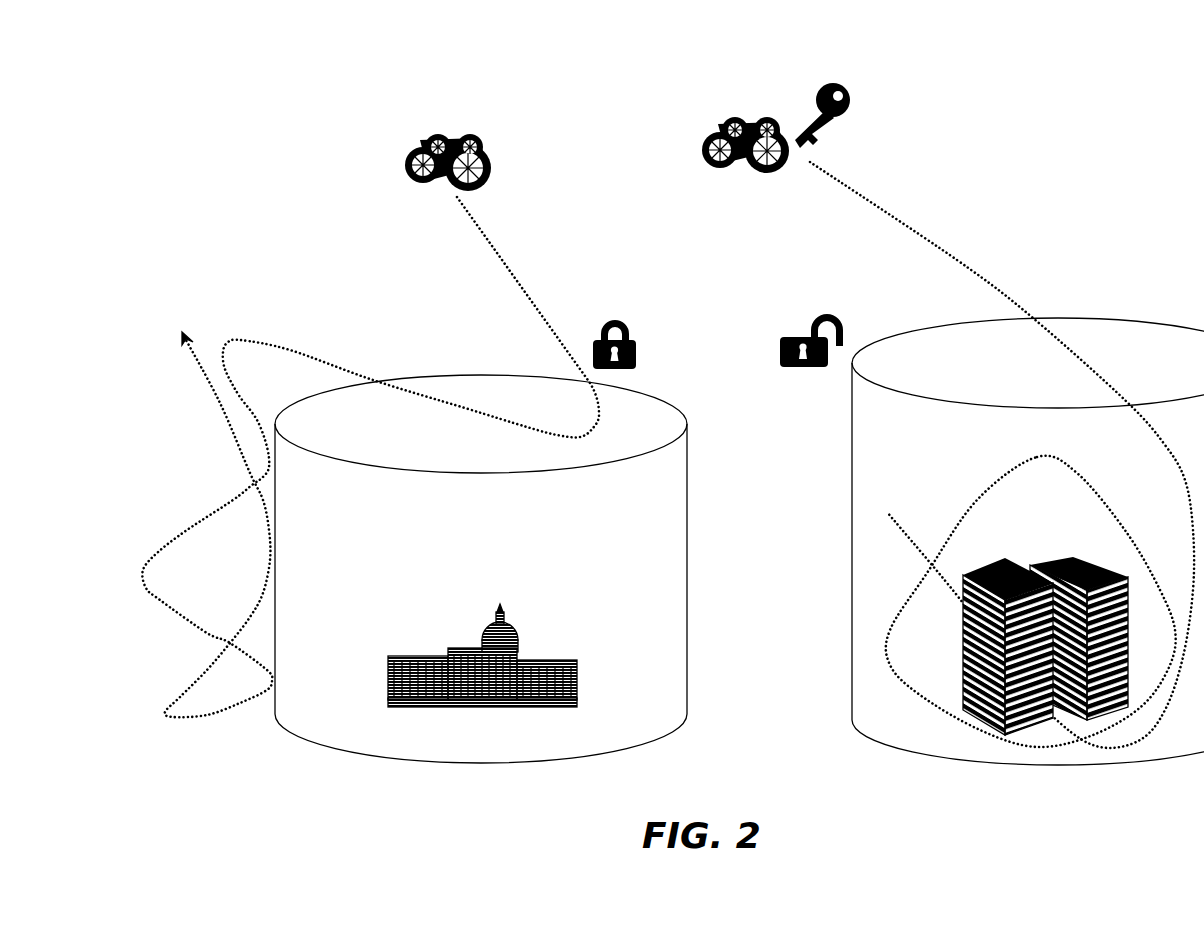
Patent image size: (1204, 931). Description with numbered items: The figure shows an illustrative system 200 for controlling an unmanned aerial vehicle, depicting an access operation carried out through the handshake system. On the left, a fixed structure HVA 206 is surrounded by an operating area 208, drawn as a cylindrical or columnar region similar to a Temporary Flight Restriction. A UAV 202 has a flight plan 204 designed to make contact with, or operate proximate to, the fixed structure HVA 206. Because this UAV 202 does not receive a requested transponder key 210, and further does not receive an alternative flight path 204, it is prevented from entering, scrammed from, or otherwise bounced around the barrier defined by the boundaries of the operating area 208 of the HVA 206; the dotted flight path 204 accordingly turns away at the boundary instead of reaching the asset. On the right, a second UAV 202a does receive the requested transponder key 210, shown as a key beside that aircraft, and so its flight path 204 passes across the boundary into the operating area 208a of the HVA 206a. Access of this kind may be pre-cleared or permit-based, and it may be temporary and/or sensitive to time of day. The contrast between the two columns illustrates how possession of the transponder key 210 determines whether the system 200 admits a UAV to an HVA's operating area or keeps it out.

The system for controlling an unmanned aerial vehicle 200 is at (230, 118).
The UAV 202 is at (435, 120).
The UAV 202a is at (693, 143).
The flight plan 204 is at (503, 255).
The fixed structure HVA 206 is at (542, 670).
The HVA 206a is at (1013, 560).
The operating area 208 is at (690, 558).
The operating area 208a is at (852, 636).
The transponder key 210 is at (851, 112).